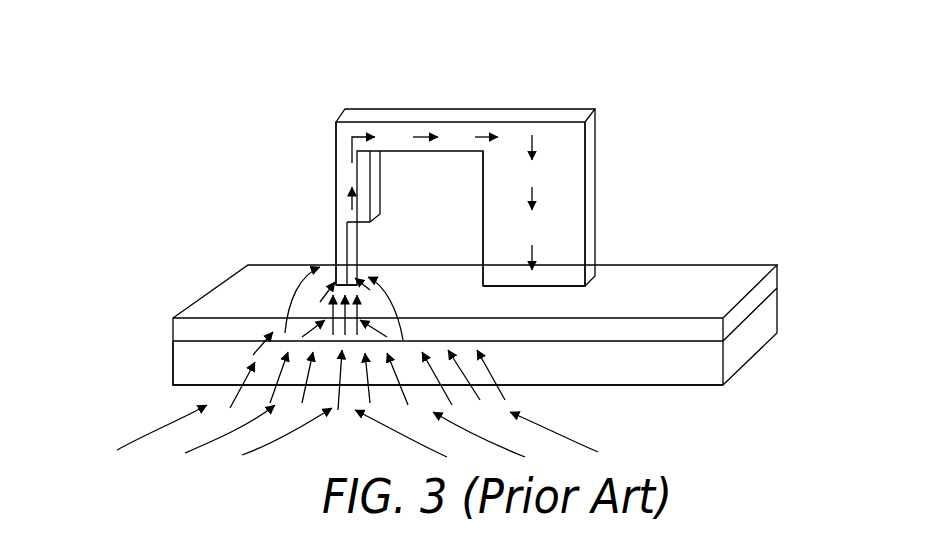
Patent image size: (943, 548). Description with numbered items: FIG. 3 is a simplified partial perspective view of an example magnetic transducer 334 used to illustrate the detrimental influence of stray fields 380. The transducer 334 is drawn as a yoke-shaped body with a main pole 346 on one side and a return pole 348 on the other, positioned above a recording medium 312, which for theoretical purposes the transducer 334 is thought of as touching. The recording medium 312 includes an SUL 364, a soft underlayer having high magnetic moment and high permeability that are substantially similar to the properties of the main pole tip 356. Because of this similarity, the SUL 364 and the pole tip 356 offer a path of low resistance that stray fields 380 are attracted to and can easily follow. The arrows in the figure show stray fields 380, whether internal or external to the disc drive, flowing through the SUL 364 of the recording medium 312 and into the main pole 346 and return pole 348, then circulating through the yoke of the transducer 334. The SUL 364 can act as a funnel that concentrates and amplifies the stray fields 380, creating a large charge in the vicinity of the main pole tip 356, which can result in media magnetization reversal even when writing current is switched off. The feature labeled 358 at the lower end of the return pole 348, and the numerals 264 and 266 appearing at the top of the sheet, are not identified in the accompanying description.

The track 264 is at (167, 0).
The track 266 is at (239, 0).
The recording medium 312 is at (777, 298).
The magnetic transducer 334 is at (672, 110).
The main pole 346 is at (350, 170).
The return pole 348 is at (558, 176).
The main pole tip 356 is at (338, 280).
The return pole tip 358 is at (547, 285).
The SUL 364 is at (637, 368).
The stray fields 380 is at (494, 132).